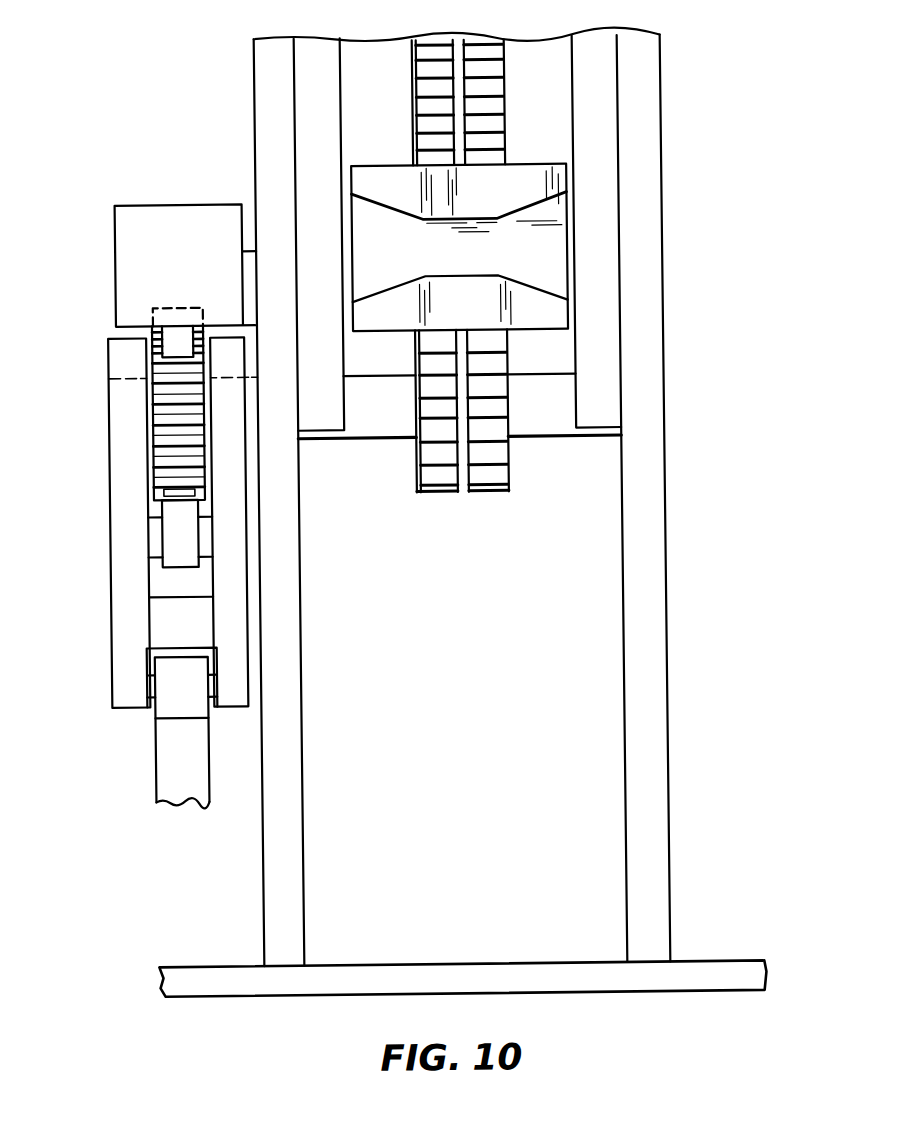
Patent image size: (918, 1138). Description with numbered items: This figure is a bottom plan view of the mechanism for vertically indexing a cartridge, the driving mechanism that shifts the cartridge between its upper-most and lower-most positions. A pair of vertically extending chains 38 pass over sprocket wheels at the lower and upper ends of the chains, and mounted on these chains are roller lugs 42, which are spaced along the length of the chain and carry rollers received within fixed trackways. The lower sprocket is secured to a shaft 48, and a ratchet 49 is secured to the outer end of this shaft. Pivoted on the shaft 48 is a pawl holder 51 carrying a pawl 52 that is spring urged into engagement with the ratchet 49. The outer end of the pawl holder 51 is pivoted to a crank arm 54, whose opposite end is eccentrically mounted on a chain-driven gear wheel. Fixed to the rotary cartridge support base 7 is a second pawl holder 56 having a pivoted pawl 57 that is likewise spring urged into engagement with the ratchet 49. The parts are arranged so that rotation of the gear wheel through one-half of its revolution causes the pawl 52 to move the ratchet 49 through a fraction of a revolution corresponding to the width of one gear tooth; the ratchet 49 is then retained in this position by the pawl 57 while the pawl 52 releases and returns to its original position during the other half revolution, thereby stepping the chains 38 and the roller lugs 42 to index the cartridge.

The rotary cartridge support base 7 is at (288, 813).
The vertically extending chains 38 is at (487, 480).
The roller lugs 42 is at (511, 193).
The shaft 48 is at (394, 354).
The ratchet 49 is at (166, 395).
The pawl holder 51 is at (126, 579).
The pawl 52 is at (178, 529).
The crank arm 54 is at (177, 760).
The pawl holder 56 is at (141, 245).
The pawl 57 is at (131, 321).